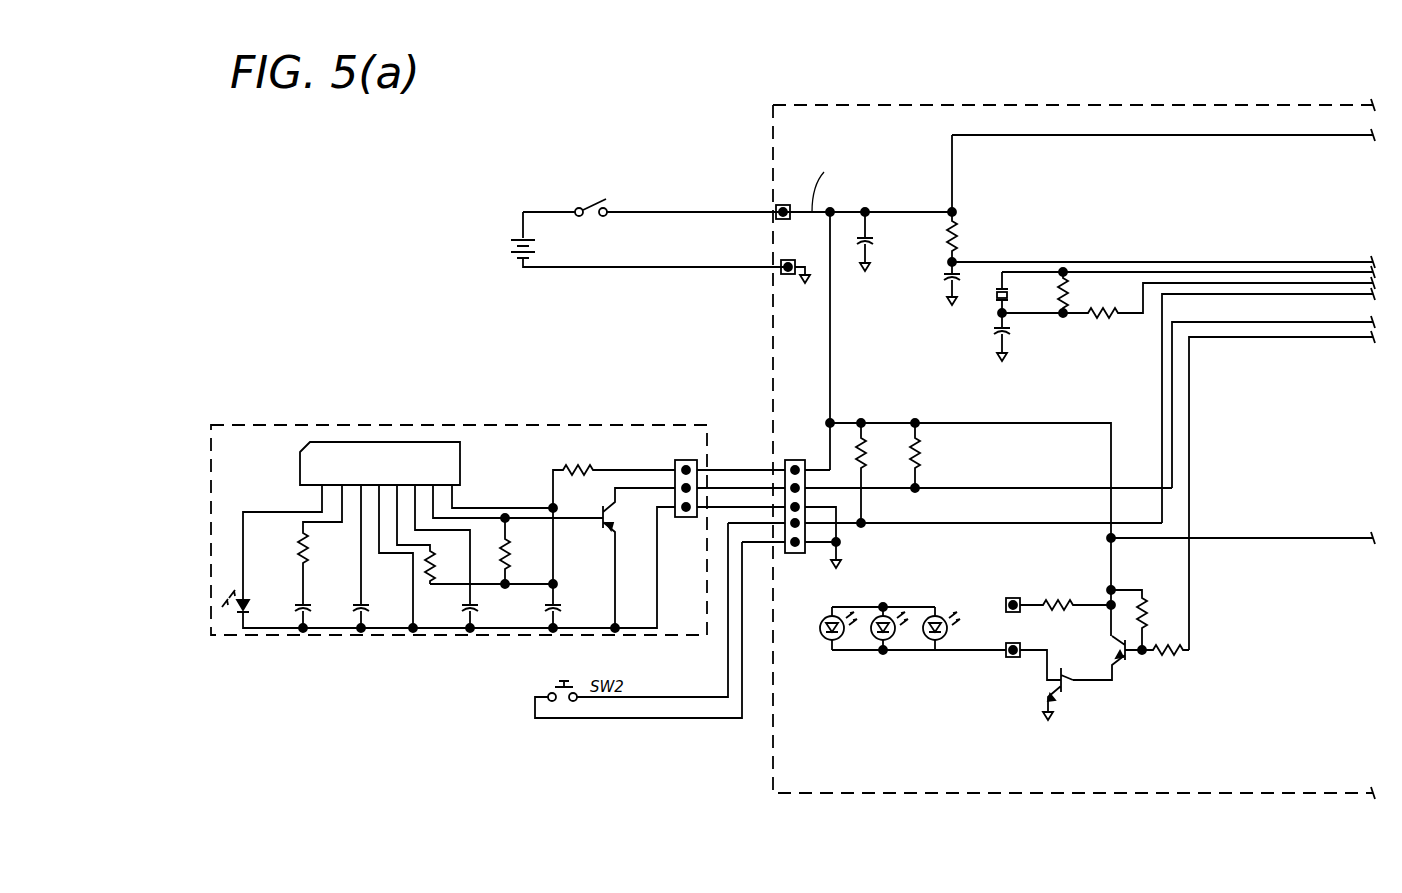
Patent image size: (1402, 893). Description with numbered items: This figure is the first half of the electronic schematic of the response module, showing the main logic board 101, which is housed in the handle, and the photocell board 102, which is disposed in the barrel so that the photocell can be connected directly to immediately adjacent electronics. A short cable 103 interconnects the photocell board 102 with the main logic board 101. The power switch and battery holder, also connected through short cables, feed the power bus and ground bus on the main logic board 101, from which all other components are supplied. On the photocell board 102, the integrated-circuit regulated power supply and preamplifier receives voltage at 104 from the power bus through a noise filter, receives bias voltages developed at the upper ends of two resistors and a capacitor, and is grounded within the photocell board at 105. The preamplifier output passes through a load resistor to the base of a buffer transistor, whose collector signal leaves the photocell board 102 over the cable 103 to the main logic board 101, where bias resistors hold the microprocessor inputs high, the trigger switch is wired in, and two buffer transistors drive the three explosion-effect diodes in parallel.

The main logic board 101 is at (1096, 68).
The photocell board 102 is at (507, 424).
The short cable 103 is at (742, 461).
The voltage input point 104 is at (500, 508).
The ground point 105 is at (415, 608).